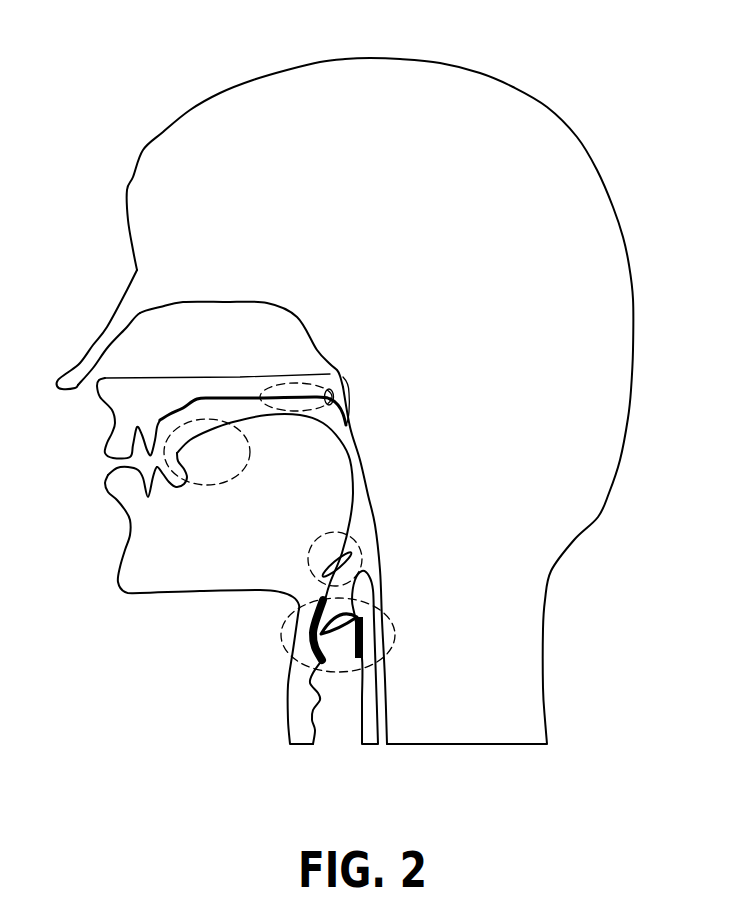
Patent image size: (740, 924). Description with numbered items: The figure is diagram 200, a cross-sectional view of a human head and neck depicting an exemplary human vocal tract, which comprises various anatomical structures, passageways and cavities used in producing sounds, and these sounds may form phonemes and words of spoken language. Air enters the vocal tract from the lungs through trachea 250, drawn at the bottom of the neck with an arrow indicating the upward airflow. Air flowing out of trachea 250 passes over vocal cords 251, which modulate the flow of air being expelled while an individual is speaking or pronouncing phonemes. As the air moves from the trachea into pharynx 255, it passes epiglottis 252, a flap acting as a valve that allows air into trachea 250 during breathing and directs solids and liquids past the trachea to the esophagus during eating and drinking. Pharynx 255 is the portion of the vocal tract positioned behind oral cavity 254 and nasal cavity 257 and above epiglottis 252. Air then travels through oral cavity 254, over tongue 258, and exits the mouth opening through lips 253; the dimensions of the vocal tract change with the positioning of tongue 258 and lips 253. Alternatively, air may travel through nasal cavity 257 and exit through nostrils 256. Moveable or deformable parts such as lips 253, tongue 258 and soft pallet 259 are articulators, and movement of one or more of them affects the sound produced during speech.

The diagram 200 is at (116, 93).
The trachea 250 is at (335, 722).
The vocal cords 251 is at (282, 635).
The epiglottis 252 is at (307, 552).
The lips 253 is at (93, 475).
The oral cavity 254 is at (241, 416).
The pharynx 255 is at (389, 456).
The nostrils 256 is at (67, 402).
The nasal cavity 257 is at (256, 314).
The tongue 258 is at (213, 487).
The soft pallet 259 is at (340, 389).